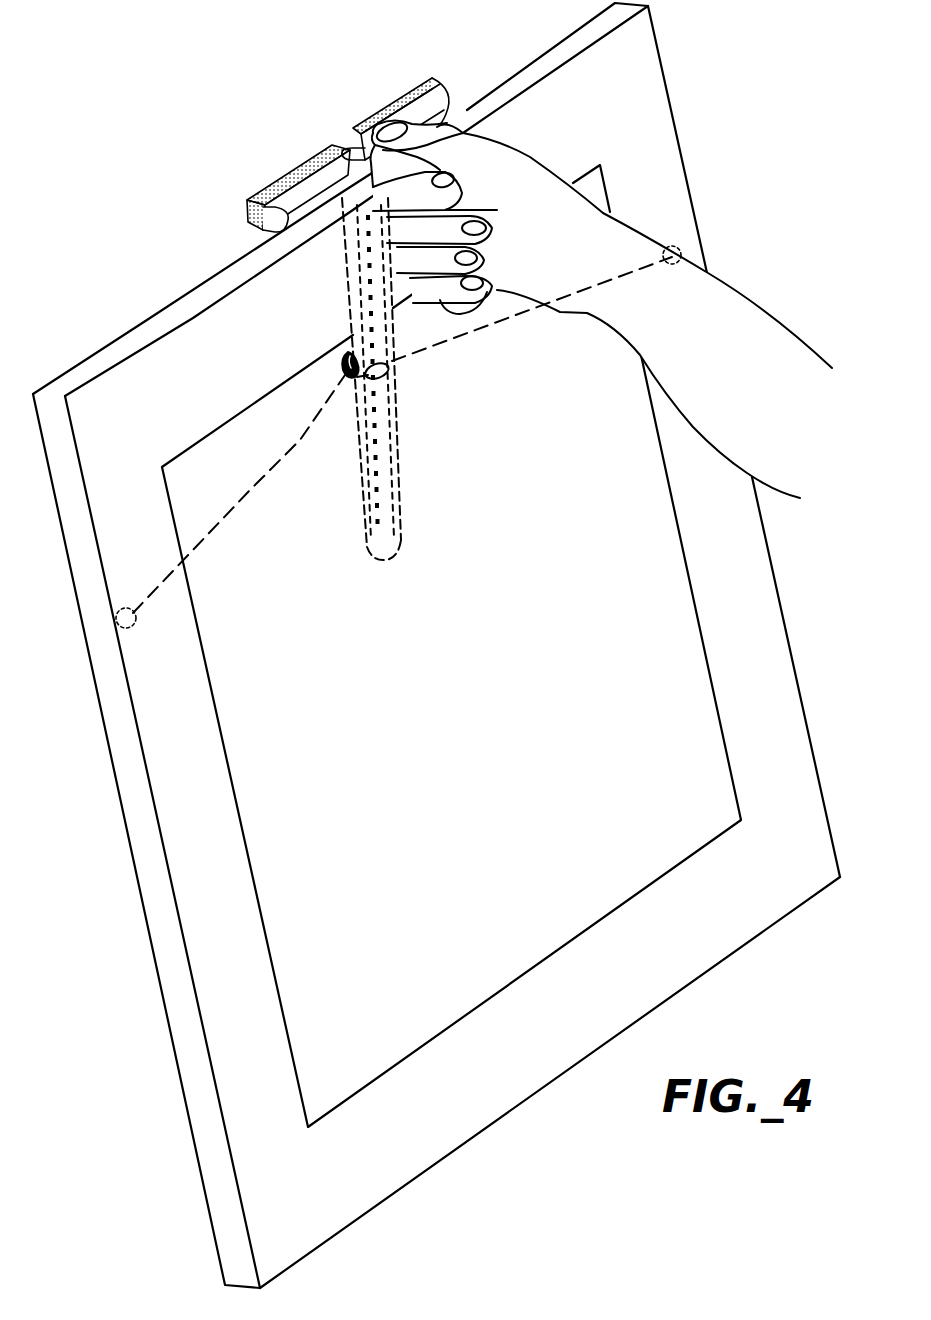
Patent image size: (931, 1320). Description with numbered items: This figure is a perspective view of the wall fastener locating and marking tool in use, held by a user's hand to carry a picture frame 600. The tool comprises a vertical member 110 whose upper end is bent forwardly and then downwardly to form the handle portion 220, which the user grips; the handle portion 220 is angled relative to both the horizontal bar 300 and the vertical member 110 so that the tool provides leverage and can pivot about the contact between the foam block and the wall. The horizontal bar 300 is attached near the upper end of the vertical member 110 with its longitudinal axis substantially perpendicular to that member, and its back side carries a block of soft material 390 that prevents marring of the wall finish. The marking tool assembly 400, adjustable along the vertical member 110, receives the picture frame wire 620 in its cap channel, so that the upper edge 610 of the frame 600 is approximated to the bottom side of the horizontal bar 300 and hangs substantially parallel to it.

The vertical member 110 is at (397, 458).
The handle portion 220 is at (478, 320).
The horizontal bar 300 is at (438, 78).
The soft material 390 is at (291, 166).
The marking tool assembly 400 is at (343, 378).
The picture frame 600 is at (757, 588).
The upper edge 610 is at (218, 275).
The picture frame wire 620 is at (233, 510).